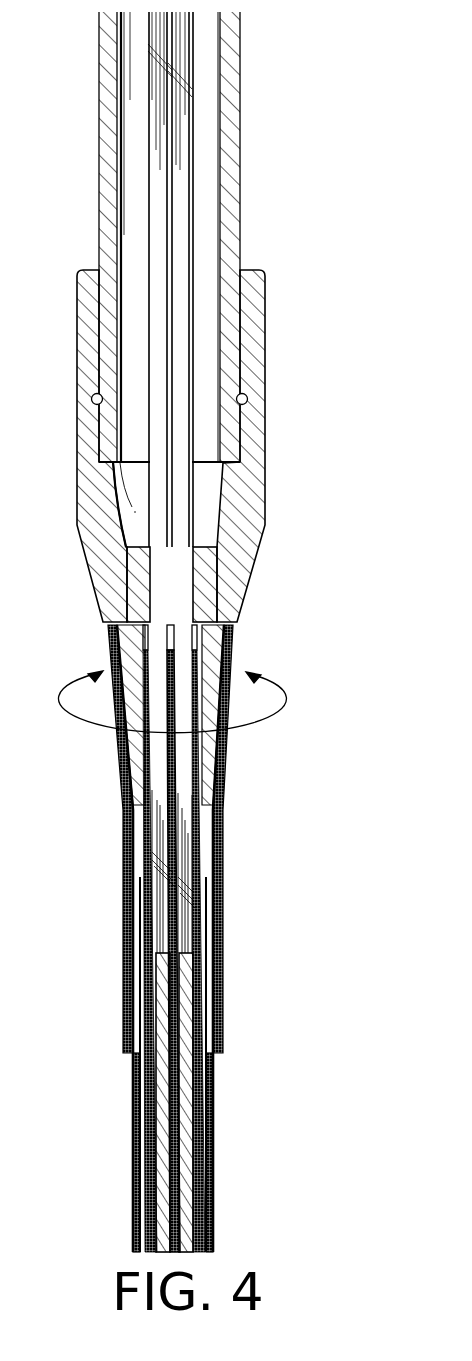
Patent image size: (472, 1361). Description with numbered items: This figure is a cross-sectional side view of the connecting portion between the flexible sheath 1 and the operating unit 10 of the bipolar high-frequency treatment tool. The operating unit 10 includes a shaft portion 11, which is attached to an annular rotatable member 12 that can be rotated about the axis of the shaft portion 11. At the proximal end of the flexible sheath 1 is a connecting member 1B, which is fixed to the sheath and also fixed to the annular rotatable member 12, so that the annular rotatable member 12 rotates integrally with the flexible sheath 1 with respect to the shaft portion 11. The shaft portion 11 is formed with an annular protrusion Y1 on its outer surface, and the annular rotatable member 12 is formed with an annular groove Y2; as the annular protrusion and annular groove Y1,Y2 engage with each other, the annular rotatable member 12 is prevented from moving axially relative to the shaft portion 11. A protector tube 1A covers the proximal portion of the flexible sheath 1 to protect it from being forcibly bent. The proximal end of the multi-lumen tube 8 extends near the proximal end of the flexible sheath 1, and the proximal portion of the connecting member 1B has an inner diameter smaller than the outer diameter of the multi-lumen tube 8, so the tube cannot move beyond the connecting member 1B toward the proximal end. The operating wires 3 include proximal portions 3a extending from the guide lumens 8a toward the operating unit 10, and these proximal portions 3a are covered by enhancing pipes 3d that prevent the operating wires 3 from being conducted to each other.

The operating unit 10 is at (286, 71).
The shaft portion 11 is at (242, 127).
The annular rotatable member 12 is at (265, 492).
The annular protrusion and annular groove Y1,Y2 is at (254, 394).
The annular protrusion Y1 is at (97, 399).
The annular groove Y2 is at (242, 399).
The proximal portions 3a is at (153, 168).
The flexible sheath 1 is at (217, 1233).
The protector tube 1A is at (125, 895).
The connecting member 1B is at (137, 578).
The enhancing pipes 3d is at (222, 836).
The guide lumens 8a is at (140, 1008).
The multi-lumen tube 8 is at (150, 1222).
The operating wires 3 is at (160, 1153).